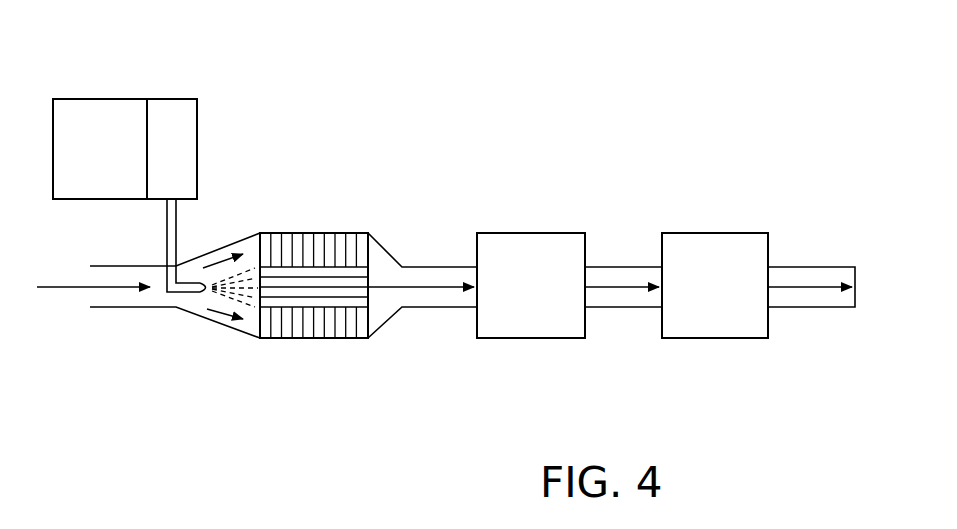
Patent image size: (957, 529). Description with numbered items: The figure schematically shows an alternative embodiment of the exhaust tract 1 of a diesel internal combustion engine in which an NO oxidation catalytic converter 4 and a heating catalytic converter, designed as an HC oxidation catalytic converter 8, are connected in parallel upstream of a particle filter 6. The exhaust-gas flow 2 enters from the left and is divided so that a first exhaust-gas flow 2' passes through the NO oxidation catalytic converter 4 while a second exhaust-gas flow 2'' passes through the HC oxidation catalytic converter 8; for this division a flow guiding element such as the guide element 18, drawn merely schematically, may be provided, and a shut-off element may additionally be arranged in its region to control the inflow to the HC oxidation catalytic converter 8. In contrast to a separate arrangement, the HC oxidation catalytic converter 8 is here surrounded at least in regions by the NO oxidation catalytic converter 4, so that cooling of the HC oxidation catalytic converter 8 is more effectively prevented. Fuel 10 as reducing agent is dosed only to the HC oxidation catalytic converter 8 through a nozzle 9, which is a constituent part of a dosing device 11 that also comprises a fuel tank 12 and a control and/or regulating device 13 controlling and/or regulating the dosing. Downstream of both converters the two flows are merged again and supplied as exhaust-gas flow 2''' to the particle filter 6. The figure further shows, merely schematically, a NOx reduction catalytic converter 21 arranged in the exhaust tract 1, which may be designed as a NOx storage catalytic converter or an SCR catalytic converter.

The exhaust tract 1 is at (464, 150).
The exhaust-gas flow 2 is at (148, 305).
The first exhaust-gas flow 2' is at (225, 350).
The second exhaust-gas flow 2'' is at (273, 226).
The exhaust-gas flow 2''' is at (422, 302).
The NO oxidation catalytic converter 4 is at (300, 331).
The particle filter 6 is at (527, 244).
The HC oxidation catalytic converter 8 is at (341, 281).
The nozzle 9 is at (188, 284).
The fuel 10 is at (206, 300).
The dosing device 11 is at (156, 113).
The fuel tank 12 is at (93, 116).
The control and/or regulating device 13 is at (179, 164).
The guide element 18 is at (250, 311).
The NOx reduction catalytic converter 21 is at (723, 244).